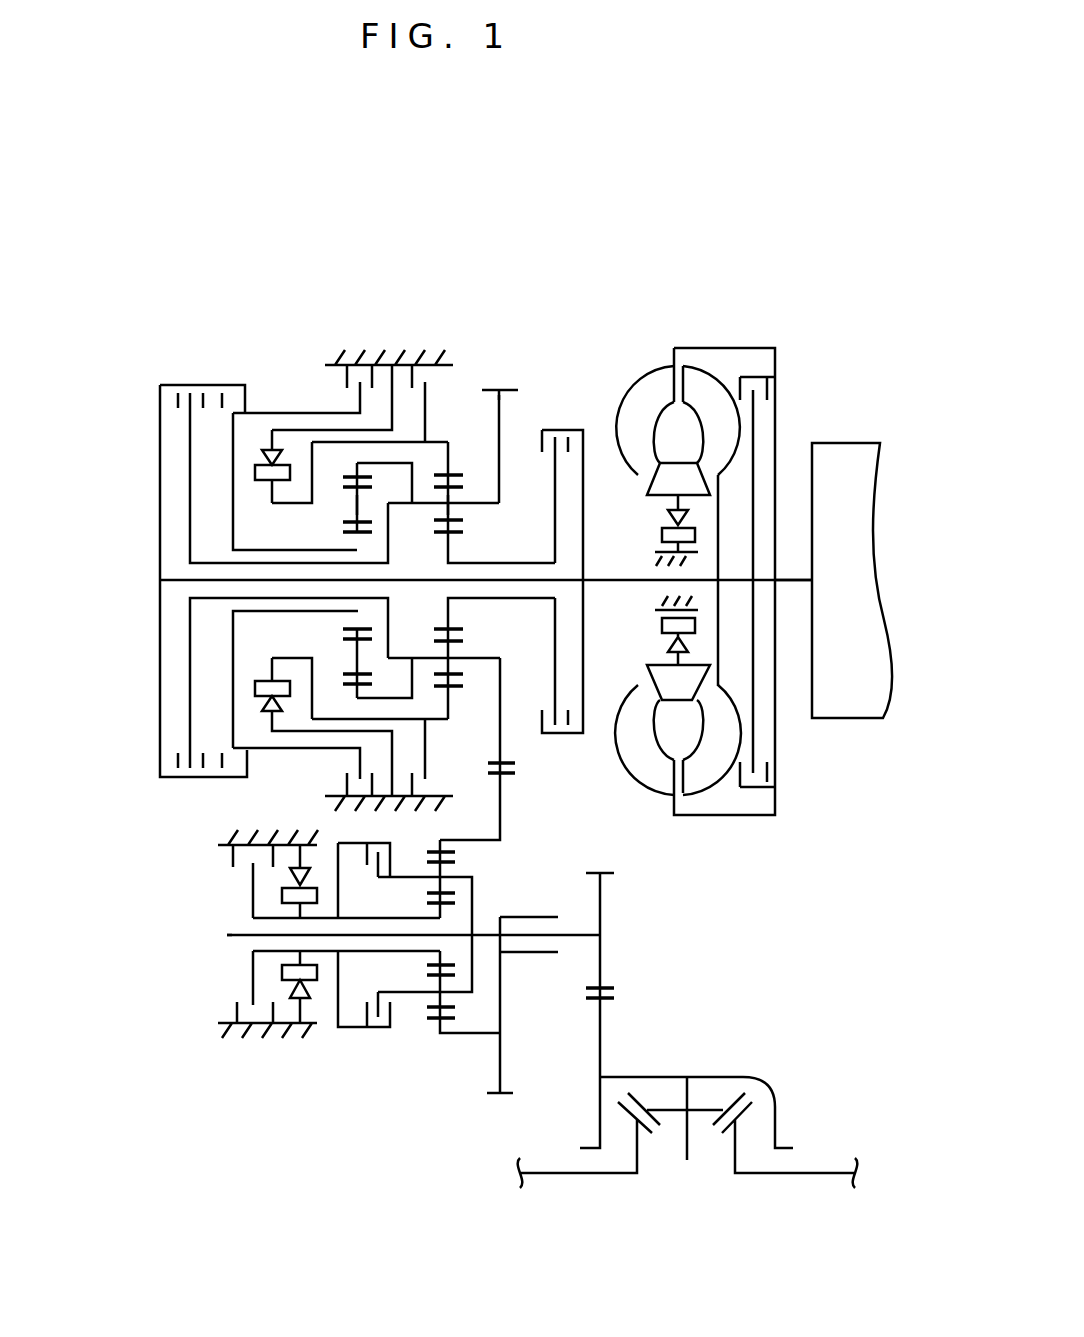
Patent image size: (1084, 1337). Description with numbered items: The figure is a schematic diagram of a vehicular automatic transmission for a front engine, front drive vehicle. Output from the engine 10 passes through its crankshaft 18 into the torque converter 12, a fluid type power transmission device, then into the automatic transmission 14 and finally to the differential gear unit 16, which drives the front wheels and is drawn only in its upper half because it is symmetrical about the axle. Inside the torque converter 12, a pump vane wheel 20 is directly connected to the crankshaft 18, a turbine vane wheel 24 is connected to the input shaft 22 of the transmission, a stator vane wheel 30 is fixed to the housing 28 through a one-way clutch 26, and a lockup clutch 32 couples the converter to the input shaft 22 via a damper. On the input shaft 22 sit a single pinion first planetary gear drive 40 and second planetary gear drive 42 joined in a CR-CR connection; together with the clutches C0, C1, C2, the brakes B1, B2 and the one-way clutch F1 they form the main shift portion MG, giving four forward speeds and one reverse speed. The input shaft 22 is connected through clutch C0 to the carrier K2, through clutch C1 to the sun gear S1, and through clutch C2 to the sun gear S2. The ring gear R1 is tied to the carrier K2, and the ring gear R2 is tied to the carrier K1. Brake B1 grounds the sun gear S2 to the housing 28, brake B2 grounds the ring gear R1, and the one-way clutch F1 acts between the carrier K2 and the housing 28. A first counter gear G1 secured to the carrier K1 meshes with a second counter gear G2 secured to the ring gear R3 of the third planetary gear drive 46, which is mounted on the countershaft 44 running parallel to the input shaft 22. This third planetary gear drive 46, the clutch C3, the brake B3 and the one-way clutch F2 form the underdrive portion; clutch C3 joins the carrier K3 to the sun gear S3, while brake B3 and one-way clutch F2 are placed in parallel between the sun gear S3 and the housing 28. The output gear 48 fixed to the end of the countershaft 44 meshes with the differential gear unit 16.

The engine 10 is at (850, 468).
The torque converter 12 is at (744, 299).
The automatic transmission 14 is at (507, 260).
The differential gear unit 16 is at (685, 1019).
The crankshaft 18 is at (793, 582).
The pump vane wheel 20 is at (658, 387).
The input shaft 22 is at (614, 578).
The turbine vane wheel 24 is at (700, 763).
The one-way clutch 26 is at (690, 645).
The housing 28 is at (396, 352).
The stator vane wheel 30 is at (663, 487).
The lockup clutch 32 is at (765, 385).
The first planetary gear drive 40 is at (451, 390).
The second planetary gear drive 42 is at (326, 458).
The countershaft 44 is at (242, 933).
The third planetary gear drive 46 is at (428, 1059).
The output gear 48 is at (602, 988).
The main shift portion MG is at (145, 727).
The clutch C0 is at (183, 395).
The clutch C1 is at (557, 432).
The clutch C2 is at (232, 385).
The clutch C3 is at (375, 1027).
The brake B1 is at (347, 383).
The brake B2 is at (437, 383).
The brake B3 is at (237, 1010).
The one-way clutch F1 is at (268, 470).
The one-way clutch F2 is at (308, 1000).
The ring gear R1 is at (478, 450).
The ring gear R2 is at (368, 475).
The ring gear R3 is at (435, 848).
The sun gear S1 is at (452, 532).
The sun gear S2 is at (350, 532).
The sun gear S3 is at (433, 905).
The carrier K1 is at (468, 503).
The carrier K2 is at (347, 512).
The carrier K3 is at (455, 875).
The first counter gear G1 is at (512, 765).
The second counter gear G2 is at (513, 1093).